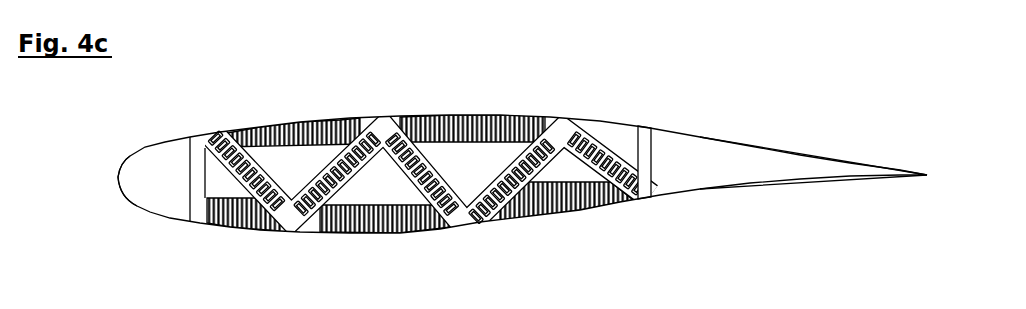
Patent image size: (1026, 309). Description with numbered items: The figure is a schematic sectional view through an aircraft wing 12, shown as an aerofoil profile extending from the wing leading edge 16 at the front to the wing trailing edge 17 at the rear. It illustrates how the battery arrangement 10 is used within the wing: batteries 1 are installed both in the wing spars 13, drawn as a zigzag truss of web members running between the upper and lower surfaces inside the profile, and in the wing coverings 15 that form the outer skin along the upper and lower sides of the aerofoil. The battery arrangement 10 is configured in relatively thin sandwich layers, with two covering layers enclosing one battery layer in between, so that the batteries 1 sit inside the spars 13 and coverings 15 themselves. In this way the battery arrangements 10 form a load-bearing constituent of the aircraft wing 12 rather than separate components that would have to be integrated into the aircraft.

The battery 1 is at (370, 124).
The battery arrangement 10 is at (292, 124).
The aircraft wing 12 is at (252, 34).
The wing spar 13 is at (410, 177).
The wing covering 15 is at (552, 121).
The wing leading edge 16 is at (142, 152).
The wing trailing edge 17 is at (706, 141).